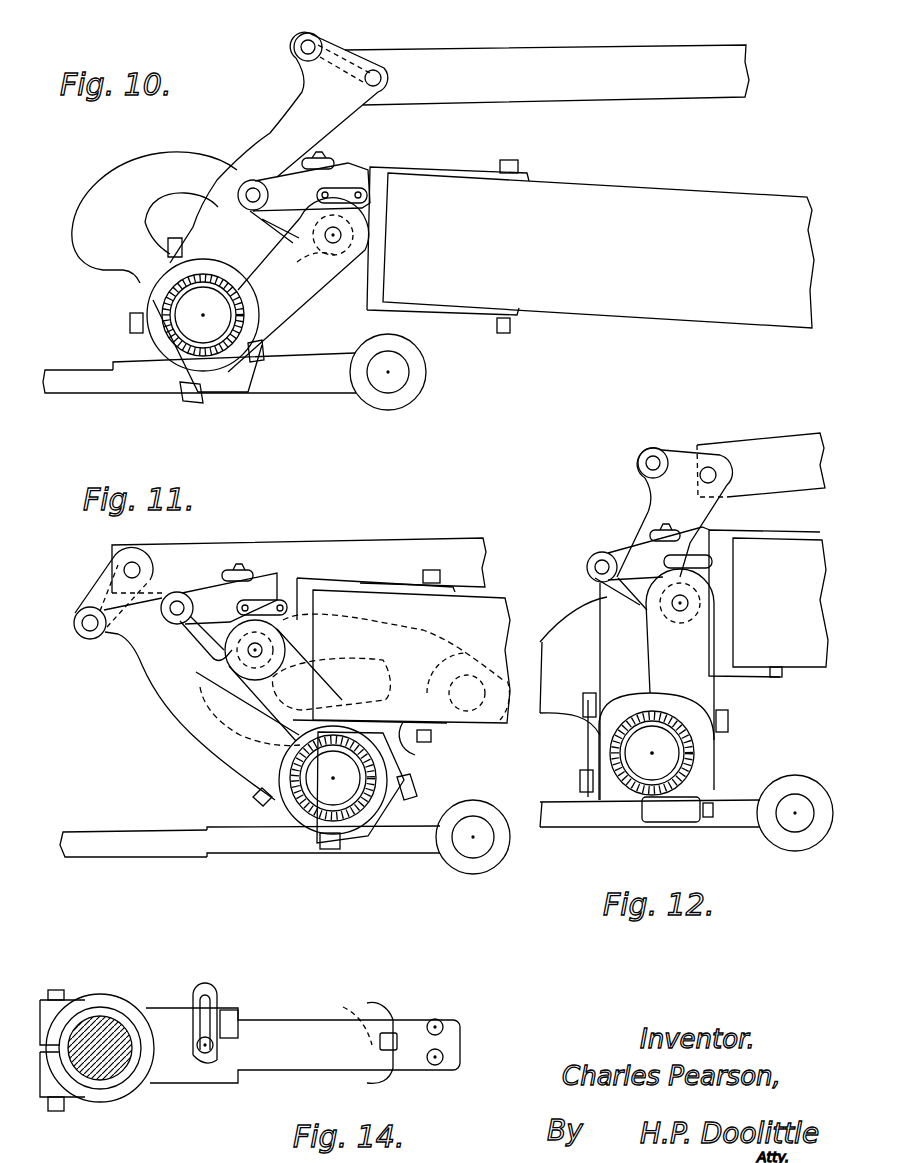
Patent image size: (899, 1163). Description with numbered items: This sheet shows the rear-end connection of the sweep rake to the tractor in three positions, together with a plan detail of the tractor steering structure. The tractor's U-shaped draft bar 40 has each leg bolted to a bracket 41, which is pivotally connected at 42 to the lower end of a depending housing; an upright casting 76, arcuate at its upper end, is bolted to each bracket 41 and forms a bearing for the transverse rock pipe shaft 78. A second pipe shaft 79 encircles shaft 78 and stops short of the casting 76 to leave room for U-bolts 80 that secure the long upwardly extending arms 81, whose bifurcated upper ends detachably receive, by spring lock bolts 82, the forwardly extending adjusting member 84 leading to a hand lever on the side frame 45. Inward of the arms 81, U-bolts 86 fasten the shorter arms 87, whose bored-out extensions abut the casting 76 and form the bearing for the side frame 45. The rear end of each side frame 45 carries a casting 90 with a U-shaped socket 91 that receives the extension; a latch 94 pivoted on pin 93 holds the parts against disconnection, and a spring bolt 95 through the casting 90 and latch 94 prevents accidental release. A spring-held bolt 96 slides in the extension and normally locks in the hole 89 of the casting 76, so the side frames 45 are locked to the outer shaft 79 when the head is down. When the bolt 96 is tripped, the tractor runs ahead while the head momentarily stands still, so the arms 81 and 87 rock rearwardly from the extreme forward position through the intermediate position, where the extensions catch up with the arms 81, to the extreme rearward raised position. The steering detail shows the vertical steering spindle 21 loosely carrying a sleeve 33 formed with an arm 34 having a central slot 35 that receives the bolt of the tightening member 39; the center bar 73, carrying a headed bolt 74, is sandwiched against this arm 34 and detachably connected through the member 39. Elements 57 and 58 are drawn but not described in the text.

In FIG. 14, the vertical steering spindle 21 is at (110, 1028).
In FIG. 14, the sleeve 33 is at (97, 993).
In FIG. 14, the arm 34 is at (190, 1080).
In FIG. 14, the central slot 35 is at (253, 1030).
In FIG. 14, the tightening member 39 is at (198, 975).
In FIG. 10, the U-shaped draft bar 40 is at (88, 383).
In FIG. 11, the U-shaped draft bar 40 is at (127, 833).
In FIG. 10, the bracket 41 is at (322, 377).
In FIG. 11, the bracket 41 is at (207, 827).
In FIG. 12, the bracket 41 is at (733, 817).
In FIG. 10, the pivotal connection 42 is at (395, 372).
In FIG. 11, the pivotal connection 42 is at (487, 836).
In FIG. 12, the pivotal connection 42 is at (795, 805).
In FIG. 10, the side frame member 45 is at (645, 308).
In FIG. 11, the side frame member 45 is at (488, 598).
In FIG. 12, the side frame member 45 is at (807, 673).
In FIG. 14, the bracket 57 is at (380, 1005).
In FIG. 14, the guide 58 is at (346, 1014).
In FIG. 14, the center bar 73 is at (441, 1017).
In FIG. 14, the headed bolt 74 is at (392, 1037).
In FIG. 10, the upright casting 76 is at (132, 176).
In FIG. 11, the upright casting 76 is at (402, 733).
In FIG. 12, the upright casting 76 is at (592, 605).
In FIG. 10, the transverse rock pipe or shaft 78 is at (222, 345).
In FIG. 11, the transverse rock pipe or shaft 78 is at (376, 766).
In FIG. 12, the transverse rock pipe or shaft 78 is at (693, 752).
In FIG. 10, the second pipe shaft 79 is at (168, 333).
In FIG. 11, the second pipe shaft 79 is at (349, 762).
In FIG. 12, the second pipe shaft 79 is at (642, 793).
In FIG. 10, the U-bolt 80 is at (130, 318).
In FIG. 11, the U-bolt 80 is at (257, 798).
In FIG. 12, the U-bolt 80 is at (583, 778).
In FIG. 10, the upwardly extending arm 81 is at (297, 88).
In FIG. 11, the upwardly extending arm 81 is at (175, 702).
In FIG. 12, the upwardly extending arm 81 is at (658, 490).
In FIG. 10, the spring lock bolt 82 is at (318, 42).
In FIG. 11, the spring lock bolt 82 is at (93, 640).
In FIG. 12, the spring lock bolt 82 is at (708, 467).
In FIG. 10, the adjusting member 84 is at (593, 57).
In FIG. 11, the adjusting member 84 is at (420, 548).
In FIG. 12, the adjusting member 84 is at (782, 445).
In FIG. 10, the U-bolt 86 is at (167, 277).
In FIG. 11, the U-bolt 86 is at (313, 828).
In FIG. 12, the U-bolt 86 is at (603, 740).
In FIG. 10, the short arm 87 is at (297, 280).
In FIG. 11, the short arm 87 is at (277, 705).
In FIG. 12, the short arm 87 is at (705, 630).
In FIG. 11, the hole 89 is at (490, 634).
In FIG. 12, the hole 89 is at (787, 673).
In FIG. 10, the casting 90 is at (462, 173).
In FIG. 11, the casting 90 is at (380, 588).
In FIG. 12, the casting 90 is at (797, 533).
In FIG. 10, the U-shaped socket 91 is at (283, 262).
In FIG. 11, the U-shaped socket 91 is at (207, 670).
In FIG. 12, the U-shaped socket 91 is at (637, 587).
In FIG. 10, the pivot pin 93 is at (259, 184).
In FIG. 11, the pivot pin 93 is at (182, 598).
In FIG. 12, the pivot pin 93 is at (603, 557).
In FIG. 10, the latch 94 is at (322, 157).
In FIG. 11, the latch 94 is at (203, 634).
In FIG. 12, the latch 94 is at (664, 529).
In FIG. 10, the spring bolt 95 is at (350, 196).
In FIG. 11, the spring bolt 95 is at (257, 603).
In FIG. 12, the spring bolt 95 is at (676, 568).
In FIG. 10, the bolt 96 is at (342, 231).
In FIG. 11, the bolt 96 is at (252, 656).
In FIG. 12, the bolt 96 is at (690, 600).